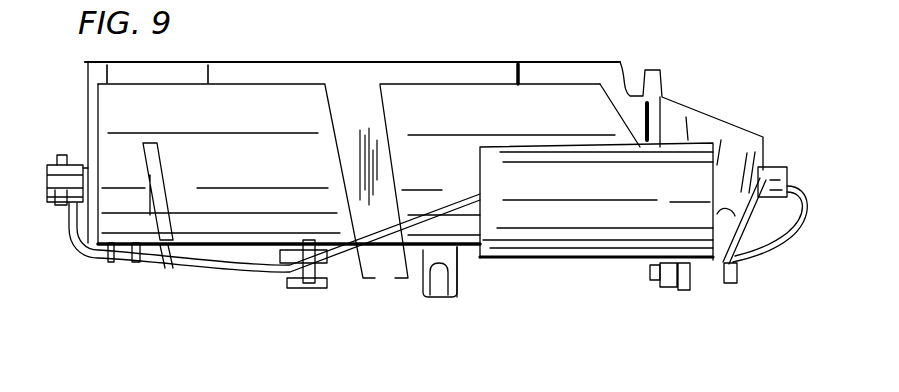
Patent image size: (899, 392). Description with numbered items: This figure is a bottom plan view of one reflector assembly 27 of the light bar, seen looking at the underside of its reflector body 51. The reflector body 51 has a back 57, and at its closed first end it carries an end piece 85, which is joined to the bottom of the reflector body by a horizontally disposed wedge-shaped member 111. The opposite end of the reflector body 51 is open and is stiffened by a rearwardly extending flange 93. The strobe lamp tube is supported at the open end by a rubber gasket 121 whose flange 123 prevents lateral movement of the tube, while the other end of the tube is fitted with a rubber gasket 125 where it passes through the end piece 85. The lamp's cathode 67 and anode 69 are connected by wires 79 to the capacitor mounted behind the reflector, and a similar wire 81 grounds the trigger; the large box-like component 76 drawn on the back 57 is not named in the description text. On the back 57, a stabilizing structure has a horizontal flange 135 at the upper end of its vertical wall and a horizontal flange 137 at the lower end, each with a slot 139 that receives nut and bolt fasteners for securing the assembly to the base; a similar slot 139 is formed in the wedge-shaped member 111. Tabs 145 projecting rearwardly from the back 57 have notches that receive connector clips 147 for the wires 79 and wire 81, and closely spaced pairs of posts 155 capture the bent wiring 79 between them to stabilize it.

The reflector assembly 27 is at (150, 309).
The reflector body 51 is at (420, 63).
The back 57 is at (277, 102).
The cathode 67 is at (51, 188).
The anode 69 is at (790, 182).
The housing 76 is at (580, 262).
The wires 79 is at (73, 247).
The wire 81 is at (155, 266).
The end piece 85 is at (765, 136).
The flange 93 is at (100, 98).
The wedge-shaped member 111 is at (620, 65).
The gasket 121 is at (45, 172).
The flange 123 is at (85, 163).
The gasket 125 is at (789, 166).
The horizontal flange 135 is at (462, 287).
The horizontal flange 137 is at (358, 278).
The slot 139 is at (635, 72).
The tab 145 is at (317, 290).
The connector clip 147 is at (293, 290).
The posts 155 is at (117, 266).